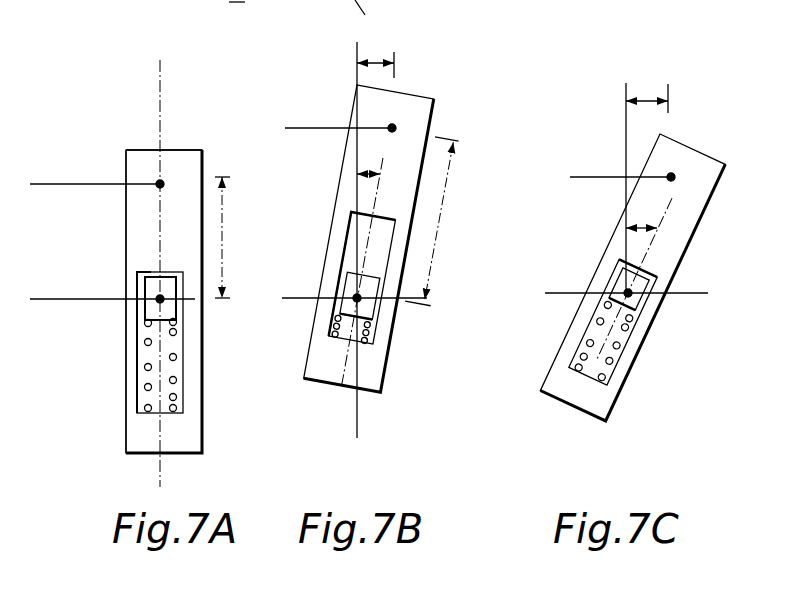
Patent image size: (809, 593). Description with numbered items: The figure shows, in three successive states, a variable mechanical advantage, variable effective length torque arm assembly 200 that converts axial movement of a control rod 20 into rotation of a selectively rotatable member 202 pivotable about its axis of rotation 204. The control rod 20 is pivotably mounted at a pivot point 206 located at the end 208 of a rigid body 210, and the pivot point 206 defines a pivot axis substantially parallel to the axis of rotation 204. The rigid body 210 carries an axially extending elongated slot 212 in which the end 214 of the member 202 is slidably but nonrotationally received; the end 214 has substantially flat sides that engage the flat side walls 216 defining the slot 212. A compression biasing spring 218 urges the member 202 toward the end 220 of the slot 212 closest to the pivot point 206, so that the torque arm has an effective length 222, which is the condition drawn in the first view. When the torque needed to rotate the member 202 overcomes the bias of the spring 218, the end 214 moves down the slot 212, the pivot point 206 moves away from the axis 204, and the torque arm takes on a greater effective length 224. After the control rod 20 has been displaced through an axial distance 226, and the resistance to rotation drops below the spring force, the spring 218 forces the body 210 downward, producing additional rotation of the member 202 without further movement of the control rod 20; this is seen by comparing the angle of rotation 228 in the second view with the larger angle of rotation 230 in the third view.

In FIG. 7A, the control rod 20 is at (52, 184).
In FIG. 7B, the control rod 20 is at (302, 128).
In FIG. 7C, the control rod 20 is at (588, 178).
In FIG. 7A, the torque arm assembly 200 is at (90, 155).
In FIG. 7B, the torque arm assembly 200 is at (343, 110).
In FIG. 7C, the torque arm assembly 200 is at (610, 138).
In FIG. 7A, the selectively rotatable member 202 is at (172, 313).
In FIG. 7B, the selectively rotatable member 202 is at (370, 288).
In FIG. 7C, the selectively rotatable member 202 is at (633, 305).
In FIG. 7A, the axis of rotation 204 is at (157, 302).
In FIG. 7B, the axis of rotation 204 is at (353, 296).
In FIG. 7A, the pivot point 206 is at (162, 182).
In FIG. 7B, the pivot point 206 is at (394, 125).
In FIG. 7C, the pivot point 206 is at (673, 175).
In FIG. 7A, the end of rigid body 208 is at (135, 167).
In FIG. 7A, the rigid body 210 is at (135, 207).
In FIG. 7A, the elongated slot 212 is at (178, 400).
In FIG. 7B, the elongated slot 212 is at (385, 244).
In FIG. 7C, the elongated slot 212 is at (615, 358).
In FIG. 7A, the end of rotatable member 214 is at (157, 301).
In FIG. 7A, the flat side walls 216 is at (142, 362).
In FIG. 7A, the compression biasing spring 218 is at (141, 393).
In FIG. 7B, the compression biasing spring 218 is at (372, 334).
In FIG. 7C, the compression biasing spring 218 is at (580, 355).
In FIG. 7A, the end of slot 220 is at (140, 280).
In FIG. 7A, the effective length 222 is at (223, 256).
In FIG. 7B, the effective length 224 is at (452, 188).
In FIG. 7B, the axial distance 226 is at (373, 60).
In FIG. 7C, the axial distance 226 is at (645, 100).
In FIG. 7B, the angle of rotation 228 is at (368, 172).
In FIG. 7C, the angle of rotation 230 is at (645, 226).